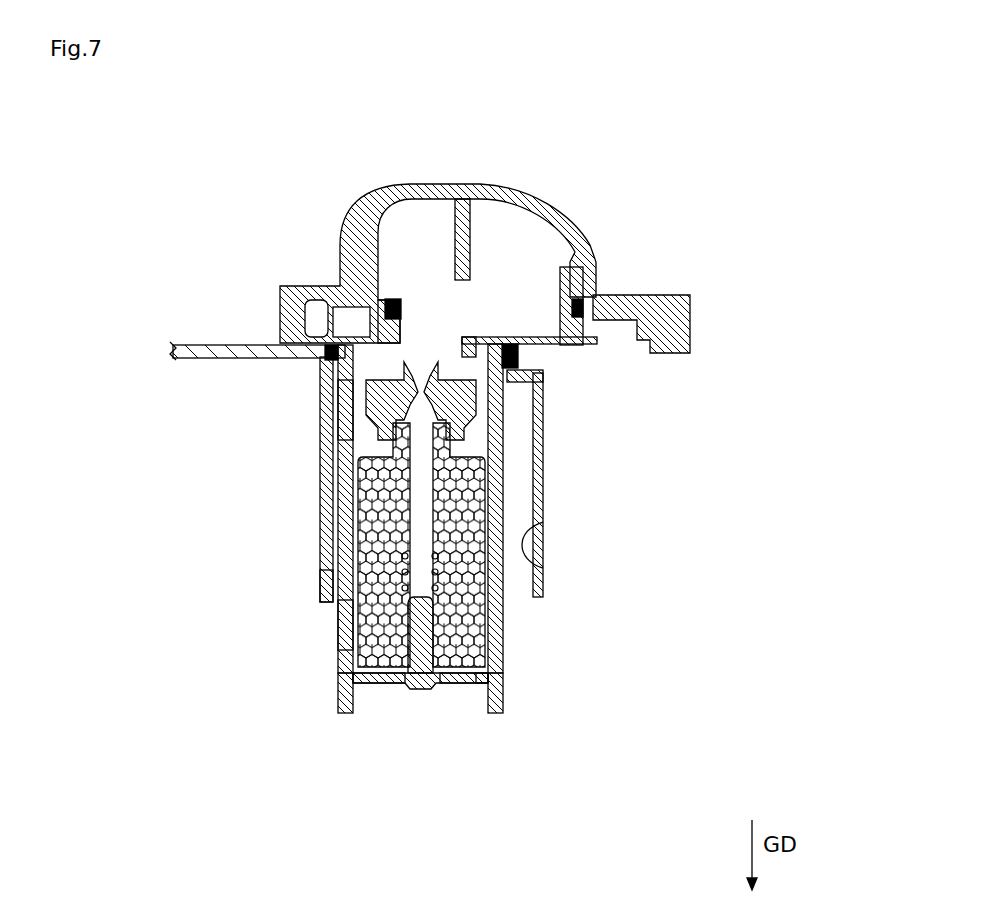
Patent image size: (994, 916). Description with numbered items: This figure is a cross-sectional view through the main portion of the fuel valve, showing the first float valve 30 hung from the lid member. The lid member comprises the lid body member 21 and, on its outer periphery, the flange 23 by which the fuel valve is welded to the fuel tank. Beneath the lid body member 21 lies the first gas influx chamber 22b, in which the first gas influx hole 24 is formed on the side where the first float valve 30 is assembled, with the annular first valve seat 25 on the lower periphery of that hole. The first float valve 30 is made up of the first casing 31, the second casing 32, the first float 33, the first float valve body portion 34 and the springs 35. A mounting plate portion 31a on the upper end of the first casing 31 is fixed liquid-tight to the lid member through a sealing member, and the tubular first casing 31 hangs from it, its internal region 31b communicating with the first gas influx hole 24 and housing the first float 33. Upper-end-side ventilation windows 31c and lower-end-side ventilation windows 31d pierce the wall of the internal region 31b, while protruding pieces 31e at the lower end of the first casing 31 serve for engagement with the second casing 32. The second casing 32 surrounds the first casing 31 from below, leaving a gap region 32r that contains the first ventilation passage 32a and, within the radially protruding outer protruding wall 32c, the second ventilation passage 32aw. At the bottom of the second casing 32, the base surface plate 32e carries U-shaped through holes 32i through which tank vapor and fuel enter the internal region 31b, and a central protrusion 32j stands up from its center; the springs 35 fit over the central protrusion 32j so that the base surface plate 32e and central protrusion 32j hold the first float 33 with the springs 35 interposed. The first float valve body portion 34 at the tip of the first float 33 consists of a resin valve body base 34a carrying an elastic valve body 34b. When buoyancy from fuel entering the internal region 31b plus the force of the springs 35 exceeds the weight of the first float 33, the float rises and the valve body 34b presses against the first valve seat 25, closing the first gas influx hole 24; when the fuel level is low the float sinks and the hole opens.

The lid body member 21 is at (520, 192).
The first gas influx chamber 22b is at (468, 314).
The flange 23 is at (655, 295).
The first gas influx hole 24 is at (402, 332).
The first valve seat 25 is at (350, 353).
The first float valve 30 is at (166, 639).
The first casing 31 is at (357, 611).
The mounting plate portion 31a is at (352, 302).
The internal region 31b is at (350, 690).
The upper-end-side ventilation window 31c is at (346, 412).
The lower-end-side ventilation window 31d is at (352, 638).
The protruding piece 31e is at (497, 708).
The second casing 32 is at (442, 601).
The first ventilation passage 32a is at (332, 604).
The second ventilation passage 32aw is at (540, 555).
The outer protruding wall 32c is at (543, 460).
The base surface plate 32e is at (468, 690).
The U-shaped through hole 32i is at (482, 692).
The central protrusion 32j is at (408, 690).
The gap region 32r is at (517, 598).
The first float 33 is at (370, 540).
The first float valve body portion 34 is at (327, 403).
The valve body base 34a is at (222, 372).
The valve body 34b is at (385, 381).
The spring 35 is at (406, 676).